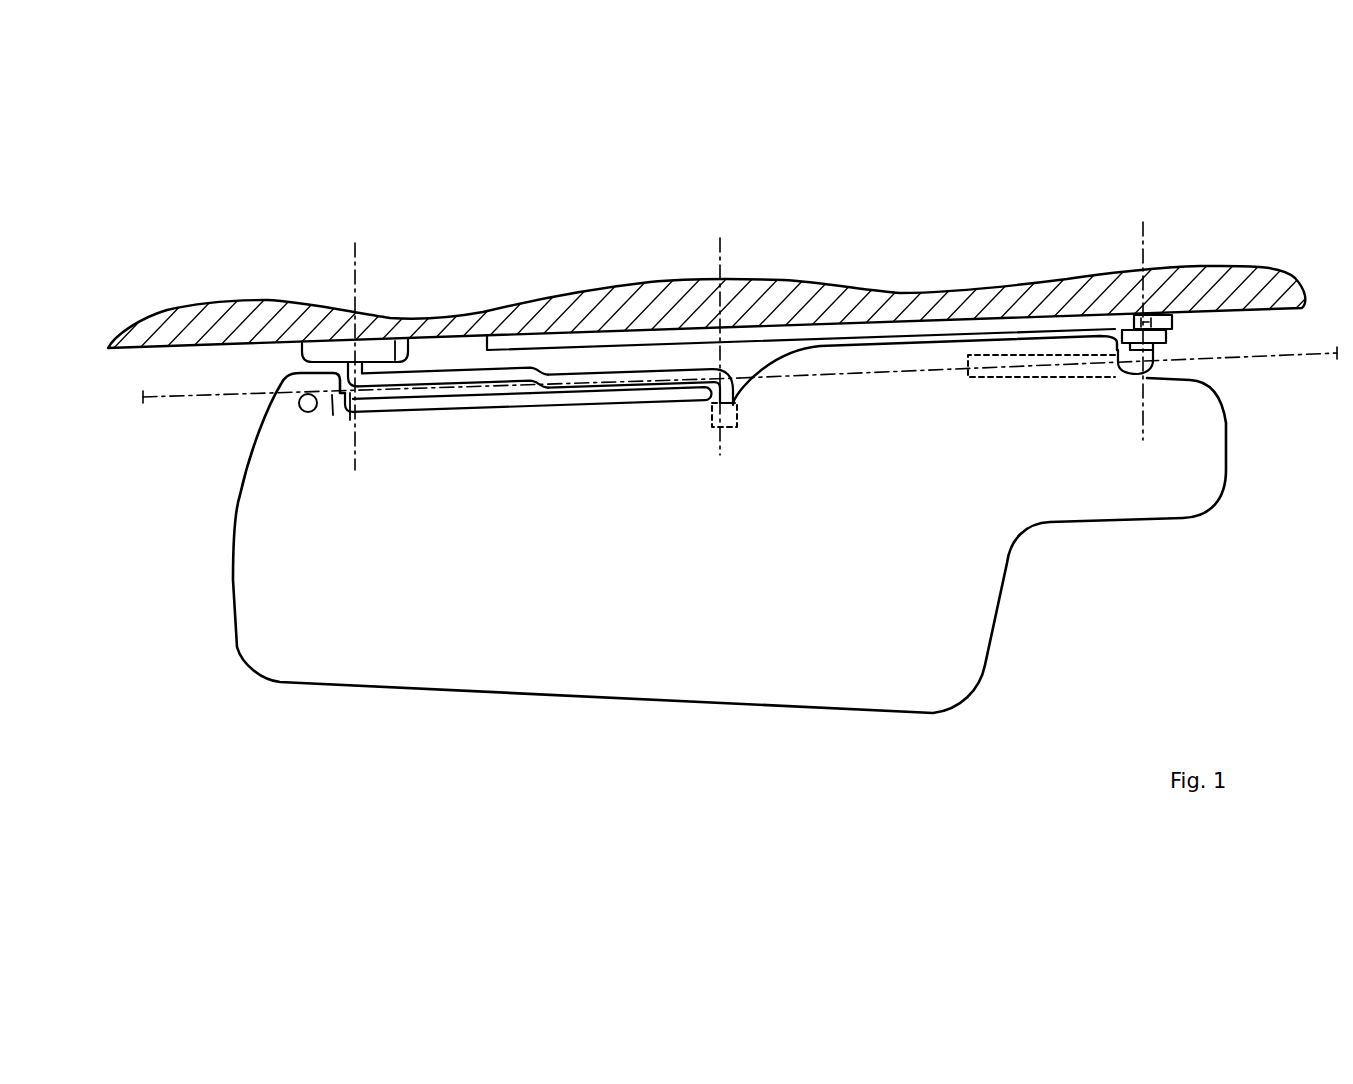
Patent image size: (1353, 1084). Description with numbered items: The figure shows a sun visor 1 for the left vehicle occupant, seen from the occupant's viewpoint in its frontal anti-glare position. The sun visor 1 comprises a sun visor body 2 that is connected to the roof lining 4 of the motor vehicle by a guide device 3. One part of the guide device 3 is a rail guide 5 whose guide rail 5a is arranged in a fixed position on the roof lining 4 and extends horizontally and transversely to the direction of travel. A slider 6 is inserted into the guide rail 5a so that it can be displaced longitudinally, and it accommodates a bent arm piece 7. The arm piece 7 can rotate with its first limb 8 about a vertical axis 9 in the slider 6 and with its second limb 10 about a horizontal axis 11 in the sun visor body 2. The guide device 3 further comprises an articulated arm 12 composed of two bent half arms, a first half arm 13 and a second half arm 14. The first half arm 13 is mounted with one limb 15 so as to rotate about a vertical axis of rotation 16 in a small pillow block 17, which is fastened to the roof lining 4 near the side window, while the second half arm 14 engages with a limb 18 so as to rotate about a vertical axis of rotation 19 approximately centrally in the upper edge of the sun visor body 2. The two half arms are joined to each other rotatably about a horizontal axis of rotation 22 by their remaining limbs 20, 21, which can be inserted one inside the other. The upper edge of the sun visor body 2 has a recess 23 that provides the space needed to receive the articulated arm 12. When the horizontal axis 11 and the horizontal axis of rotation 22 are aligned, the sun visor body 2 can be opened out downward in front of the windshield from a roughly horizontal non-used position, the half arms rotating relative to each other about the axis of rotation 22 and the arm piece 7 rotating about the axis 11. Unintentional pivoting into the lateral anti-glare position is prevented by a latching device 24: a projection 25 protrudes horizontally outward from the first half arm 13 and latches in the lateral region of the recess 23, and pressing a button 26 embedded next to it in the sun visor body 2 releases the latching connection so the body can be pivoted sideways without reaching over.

The sun visor 1 is at (129, 534).
The sun visor body 2 is at (965, 588).
The guide device 3 is at (171, 364).
The roof lining 4 is at (870, 300).
The rail guide 5 is at (1192, 329).
The guide rail 5a is at (977, 325).
The slider 6 is at (1166, 332).
The arm piece 7 is at (1113, 380).
The first limb 8 is at (1168, 316).
The vertical axis 9 is at (1140, 247).
The second limb 10 is at (1047, 380).
The horizontal axis 11 is at (1290, 355).
The articulated arm 12 is at (487, 382).
The first half arm 13 is at (430, 384).
The second half arm 14 is at (583, 380).
The limb 15 is at (395, 358).
The vertical axis of rotation 16 is at (354, 270).
The pillow block 17 is at (323, 360).
The limb 18 is at (738, 415).
The vertical axis of rotation 19 is at (713, 260).
The limb 20 is at (460, 408).
The limb 21 is at (633, 398).
The horizontal axis of rotation 22 is at (146, 400).
The recess 23 is at (743, 380).
The latching device 24 is at (332, 395).
The projection 25 is at (350, 393).
The button 26 is at (299, 406).